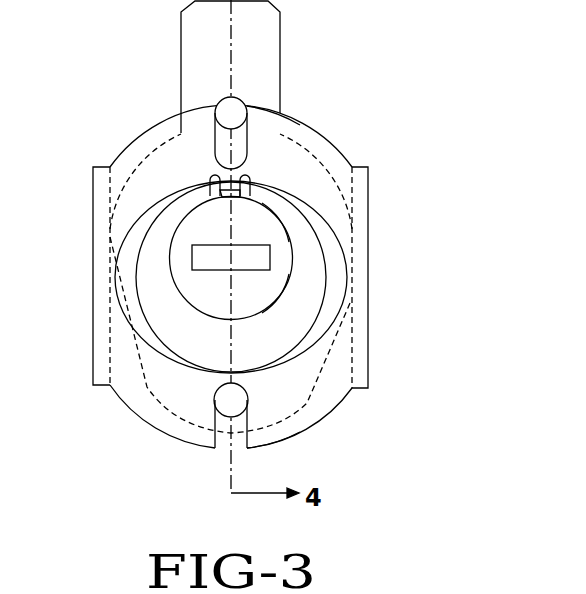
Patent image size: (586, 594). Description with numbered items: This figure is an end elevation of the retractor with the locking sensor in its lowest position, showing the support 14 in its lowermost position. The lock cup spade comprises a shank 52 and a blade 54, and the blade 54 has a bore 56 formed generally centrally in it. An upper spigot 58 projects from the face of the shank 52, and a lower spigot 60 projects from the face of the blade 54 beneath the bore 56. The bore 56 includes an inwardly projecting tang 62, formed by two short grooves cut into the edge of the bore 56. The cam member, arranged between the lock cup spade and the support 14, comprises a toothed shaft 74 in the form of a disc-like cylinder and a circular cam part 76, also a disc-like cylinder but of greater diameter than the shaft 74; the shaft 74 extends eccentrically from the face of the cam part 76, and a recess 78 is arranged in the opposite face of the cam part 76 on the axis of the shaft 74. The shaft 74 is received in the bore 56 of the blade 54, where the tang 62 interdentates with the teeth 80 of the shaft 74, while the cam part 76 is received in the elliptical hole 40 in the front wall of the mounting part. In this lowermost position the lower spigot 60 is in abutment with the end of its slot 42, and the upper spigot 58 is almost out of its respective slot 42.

The support 14 is at (410, 363).
The elliptical hole 40 is at (160, 363).
The slot 42 is at (248, 137).
The shank 52 is at (281, 58).
The blade 54 is at (302, 148).
The bore 56 is at (292, 268).
The upper spigot 58 is at (227, 110).
The lower spigot 60 is at (228, 406).
The tang 62 is at (210, 181).
The toothed shaft 74 is at (283, 235).
The cam part 76 is at (133, 273).
The recess 78 is at (208, 263).
The teeth 80 is at (172, 222).